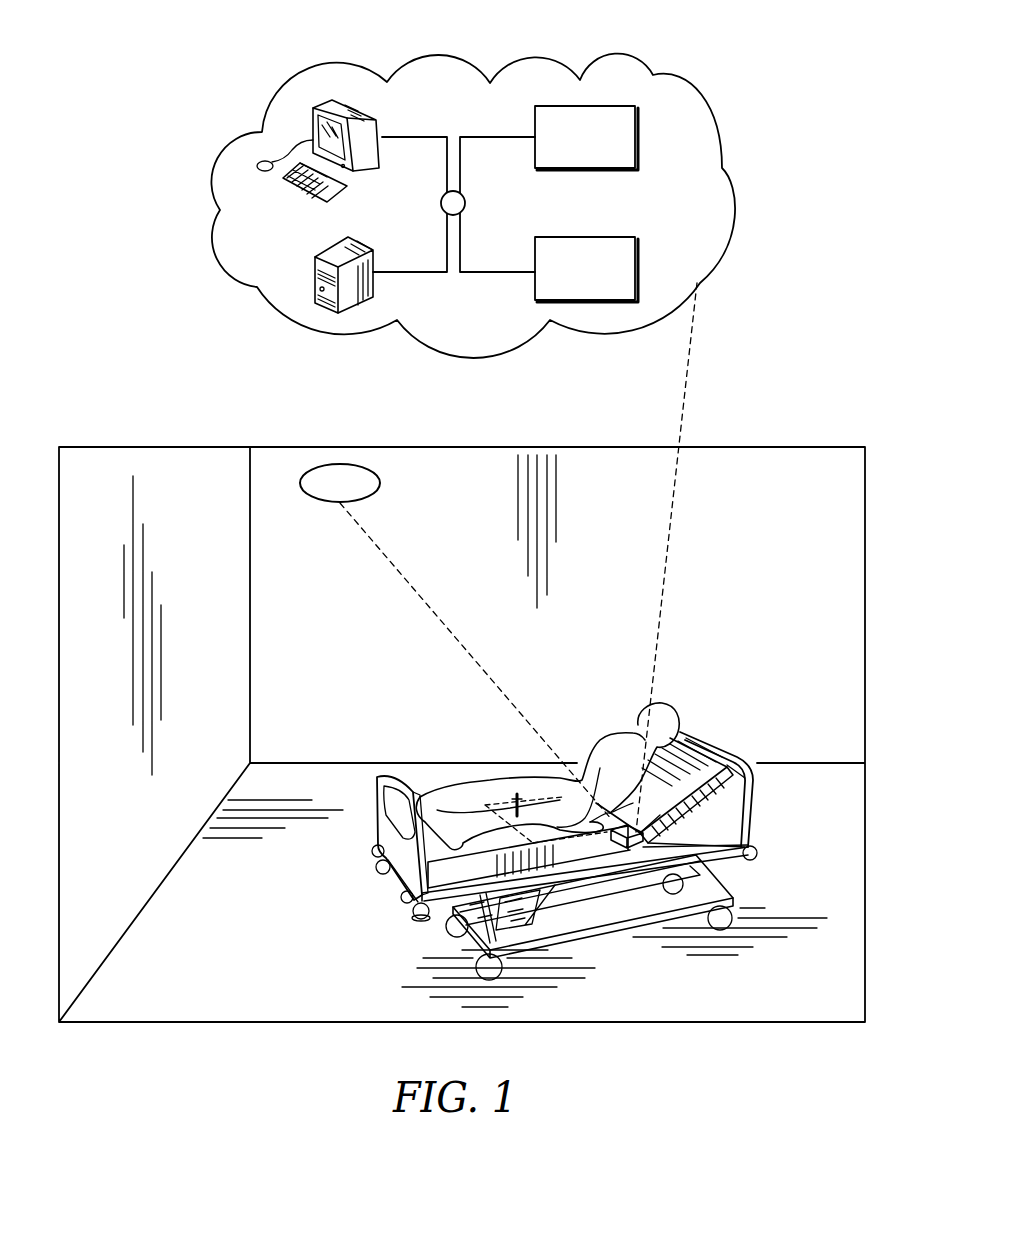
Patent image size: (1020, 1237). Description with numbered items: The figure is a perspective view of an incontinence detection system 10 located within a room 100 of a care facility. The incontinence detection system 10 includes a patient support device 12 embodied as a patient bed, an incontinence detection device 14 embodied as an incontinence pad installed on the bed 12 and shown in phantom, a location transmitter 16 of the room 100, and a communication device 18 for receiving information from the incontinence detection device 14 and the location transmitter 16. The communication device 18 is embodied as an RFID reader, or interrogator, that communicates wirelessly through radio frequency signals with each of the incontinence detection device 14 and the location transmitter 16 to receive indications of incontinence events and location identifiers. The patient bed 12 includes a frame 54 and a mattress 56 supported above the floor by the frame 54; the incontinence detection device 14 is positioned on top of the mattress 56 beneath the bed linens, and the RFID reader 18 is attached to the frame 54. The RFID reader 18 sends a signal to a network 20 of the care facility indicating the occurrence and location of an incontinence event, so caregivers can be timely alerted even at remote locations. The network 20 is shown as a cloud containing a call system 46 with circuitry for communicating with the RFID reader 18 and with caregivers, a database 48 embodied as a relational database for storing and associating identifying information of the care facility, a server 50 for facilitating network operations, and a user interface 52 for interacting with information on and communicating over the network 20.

The incontinence detection system 10 is at (95, 432).
The patient support device 12 is at (348, 849).
The incontinence detection device 14 is at (516, 794).
The location transmitter 16 is at (380, 485).
The communication device 18 is at (630, 850).
The network 20 is at (650, 76).
The call system 46 is at (636, 262).
The database 48 is at (636, 150).
The server 50 is at (360, 252).
The user interface 52 is at (362, 120).
The frame 54 is at (745, 877).
The mattress 56 is at (705, 727).
The room 100 is at (489, 728).